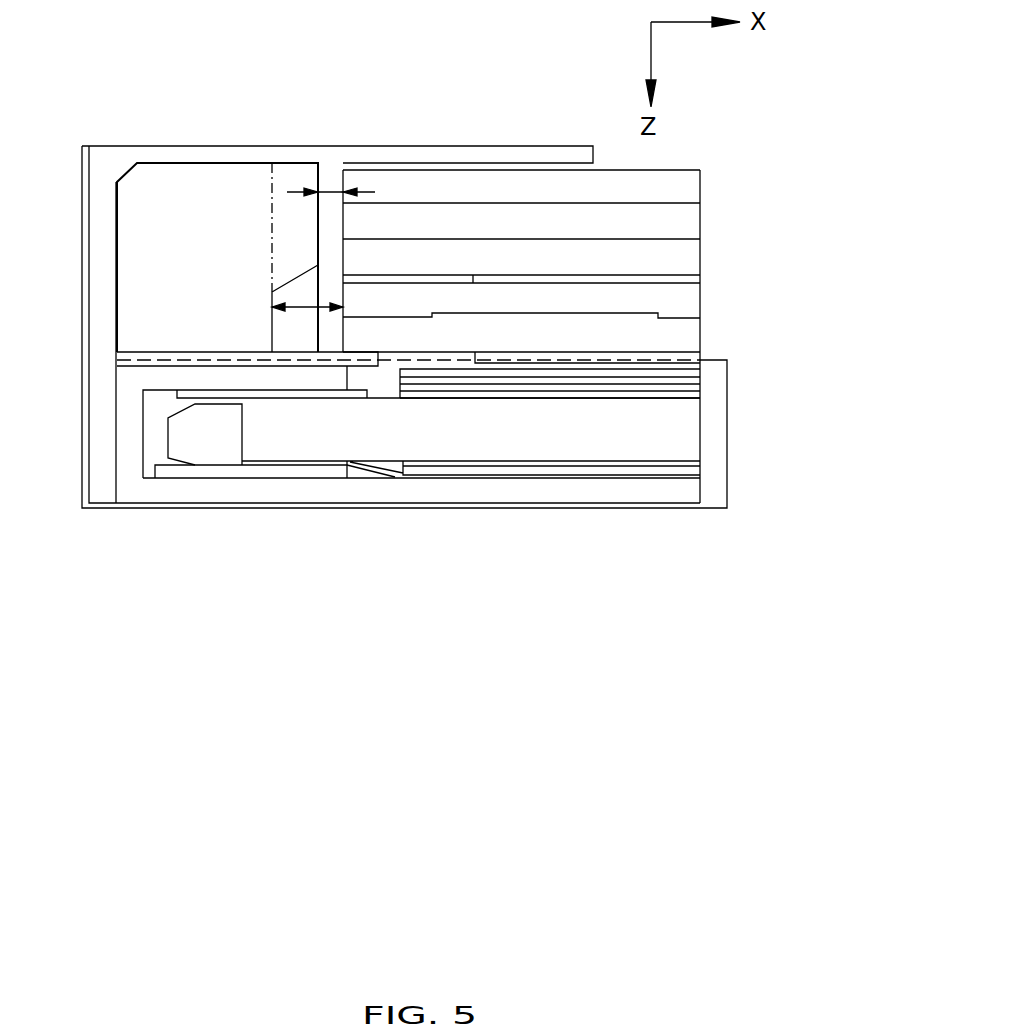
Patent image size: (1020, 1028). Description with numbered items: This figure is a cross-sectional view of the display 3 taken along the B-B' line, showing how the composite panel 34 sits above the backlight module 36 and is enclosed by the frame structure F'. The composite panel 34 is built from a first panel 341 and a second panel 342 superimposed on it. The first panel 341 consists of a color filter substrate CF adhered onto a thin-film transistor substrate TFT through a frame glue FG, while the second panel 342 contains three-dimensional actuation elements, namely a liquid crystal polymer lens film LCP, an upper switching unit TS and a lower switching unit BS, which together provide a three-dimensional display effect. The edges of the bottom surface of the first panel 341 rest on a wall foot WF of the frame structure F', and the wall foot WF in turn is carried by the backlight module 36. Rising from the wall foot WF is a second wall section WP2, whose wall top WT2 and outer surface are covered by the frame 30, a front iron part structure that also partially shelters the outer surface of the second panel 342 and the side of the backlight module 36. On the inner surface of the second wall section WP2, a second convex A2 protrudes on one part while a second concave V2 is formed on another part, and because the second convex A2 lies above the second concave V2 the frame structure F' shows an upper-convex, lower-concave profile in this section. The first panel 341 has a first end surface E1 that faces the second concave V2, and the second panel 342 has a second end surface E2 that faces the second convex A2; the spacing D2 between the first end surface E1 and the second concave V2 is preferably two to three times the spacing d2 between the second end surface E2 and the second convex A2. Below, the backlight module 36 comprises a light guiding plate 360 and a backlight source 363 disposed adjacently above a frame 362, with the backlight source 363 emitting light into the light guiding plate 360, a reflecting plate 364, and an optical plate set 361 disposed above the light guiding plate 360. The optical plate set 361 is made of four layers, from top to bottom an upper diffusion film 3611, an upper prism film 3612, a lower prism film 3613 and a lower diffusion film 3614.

The display 3 is at (90, 61).
The frame 30 is at (102, 198).
The frame structure F' is at (79, 342).
The second wall section WP2 is at (209, 275).
The wall top WT2 is at (168, 163).
The second convex A2 is at (308, 236).
The second concave V2 is at (305, 339).
The distance between first end surface and second concave D2 is at (308, 305).
The distance between second end surface and second convex d2 is at (331, 192).
The second end surface E2 is at (343, 183).
The first end surface E1 is at (343, 335).
The composite panel 34 is at (575, 336).
The second panel 342 is at (552, 222).
The first panel 341 is at (552, 323).
The liquid crystal polymer lens film LCP is at (545, 199).
The upper switching unit TS is at (542, 234).
The lower switching unit BS is at (542, 270).
The color filter substrate CF is at (542, 313).
The thin-film transistor substrate TFT is at (545, 347).
The frame glue FG is at (620, 318).
The wall foot WF is at (105, 356).
The backlight module 36 is at (436, 460).
The light guiding plate 360 is at (502, 441).
The optical plate set 361 is at (623, 424).
The upper diffusion film 3611 is at (700, 372).
The upper prism film 3612 is at (700, 381).
The lower prism film 3613 is at (700, 389).
The lower diffusion film 3614 is at (700, 397).
The frame 362 is at (152, 440).
The backlight source 363 is at (210, 452).
The reflecting plate 364 is at (177, 393).